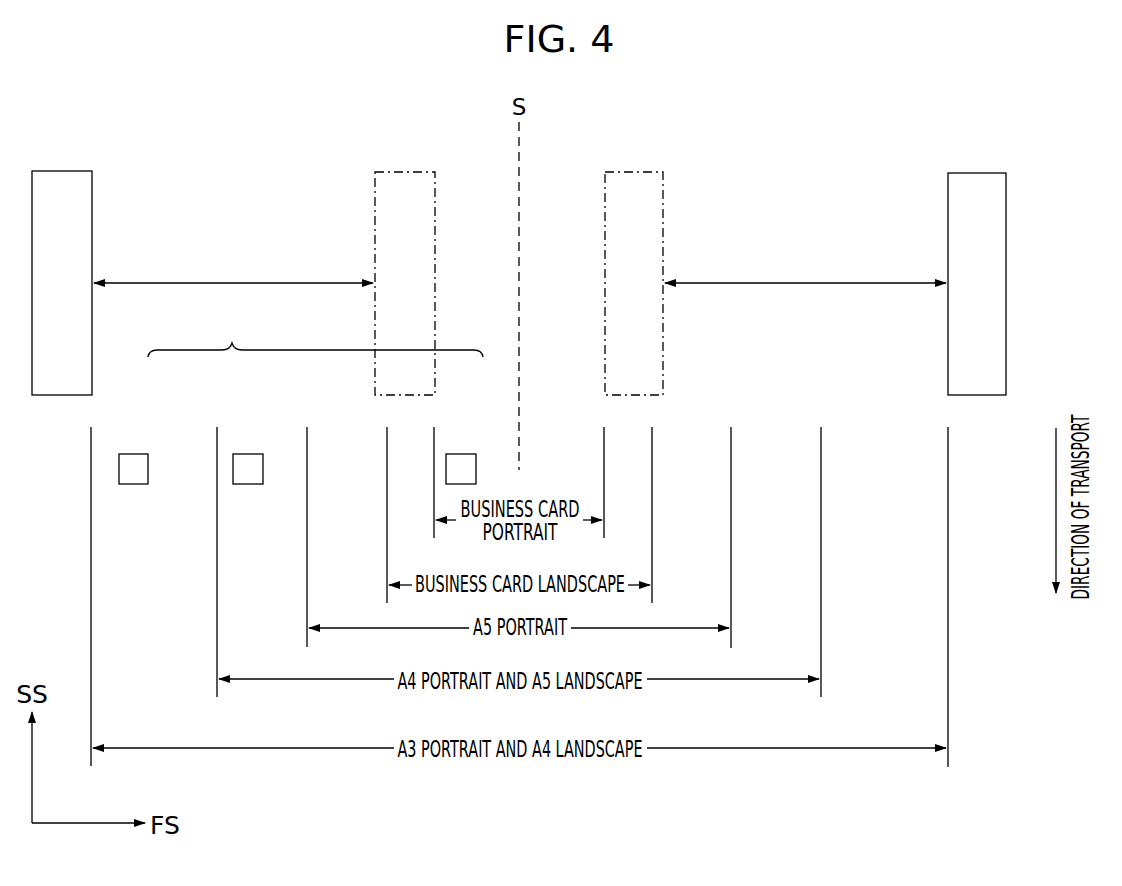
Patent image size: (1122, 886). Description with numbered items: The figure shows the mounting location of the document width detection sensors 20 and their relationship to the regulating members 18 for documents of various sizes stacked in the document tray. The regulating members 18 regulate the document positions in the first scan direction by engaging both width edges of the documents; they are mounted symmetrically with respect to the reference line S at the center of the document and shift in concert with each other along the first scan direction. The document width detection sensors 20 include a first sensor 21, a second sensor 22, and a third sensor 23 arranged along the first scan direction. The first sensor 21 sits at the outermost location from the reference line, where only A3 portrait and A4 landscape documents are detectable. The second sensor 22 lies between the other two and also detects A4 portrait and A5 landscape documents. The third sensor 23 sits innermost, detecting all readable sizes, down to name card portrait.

The regulating members 18 is at (61, 171).
The document width detection sensors 20 is at (315, 336).
The first sensor 21 is at (133, 454).
The second sensor 22 is at (247, 454).
The third sensor 23 is at (461, 454).